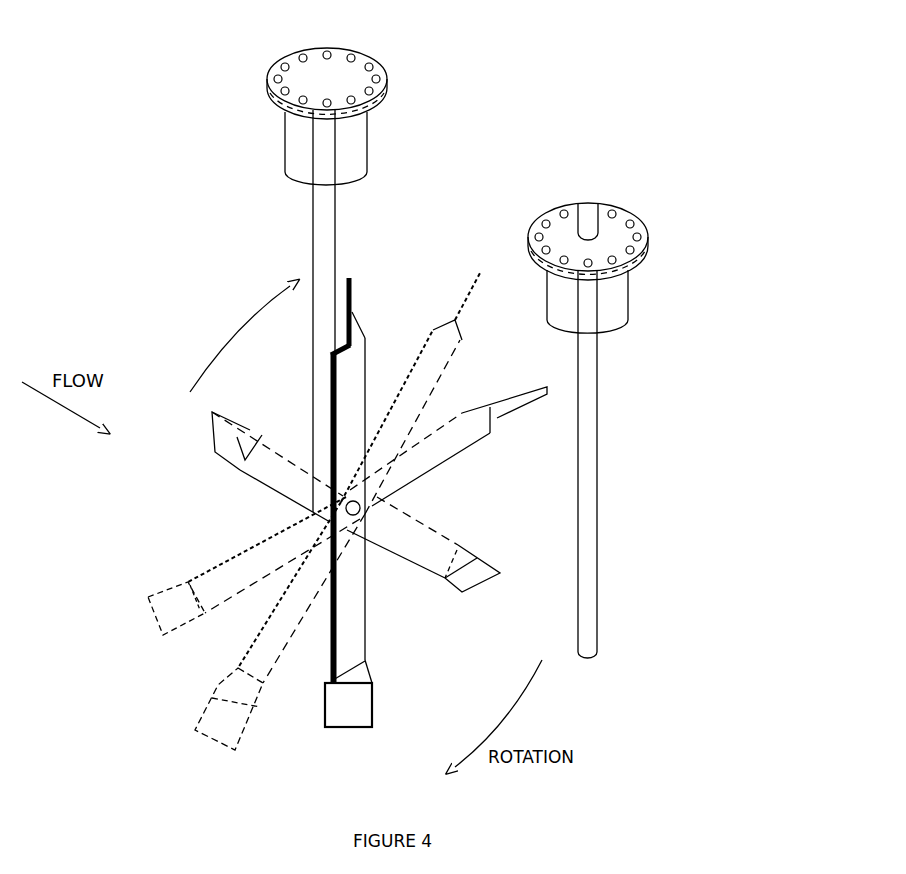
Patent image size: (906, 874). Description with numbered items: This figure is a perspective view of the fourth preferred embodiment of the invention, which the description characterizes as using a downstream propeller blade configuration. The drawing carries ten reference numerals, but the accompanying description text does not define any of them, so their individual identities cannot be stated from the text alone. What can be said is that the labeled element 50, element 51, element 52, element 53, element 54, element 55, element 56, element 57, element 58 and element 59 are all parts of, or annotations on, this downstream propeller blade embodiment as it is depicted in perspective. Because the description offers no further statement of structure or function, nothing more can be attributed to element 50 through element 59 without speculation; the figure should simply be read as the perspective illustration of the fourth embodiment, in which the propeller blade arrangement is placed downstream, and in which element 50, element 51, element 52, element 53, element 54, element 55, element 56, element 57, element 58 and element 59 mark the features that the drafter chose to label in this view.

The stationary probe assembly 50 is at (669, 385).
The slot 51 is at (625, 176).
The impeller blade assembly 52 is at (152, 750).
The shaft 53 is at (310, 244).
The lower blade section 54 is at (422, 456).
The upper blade section 55 is at (452, 185).
The blade plate 56 is at (363, 346).
The blade tip 57 is at (357, 276).
The flange 58 is at (634, 295).
The flange 59 is at (284, 149).